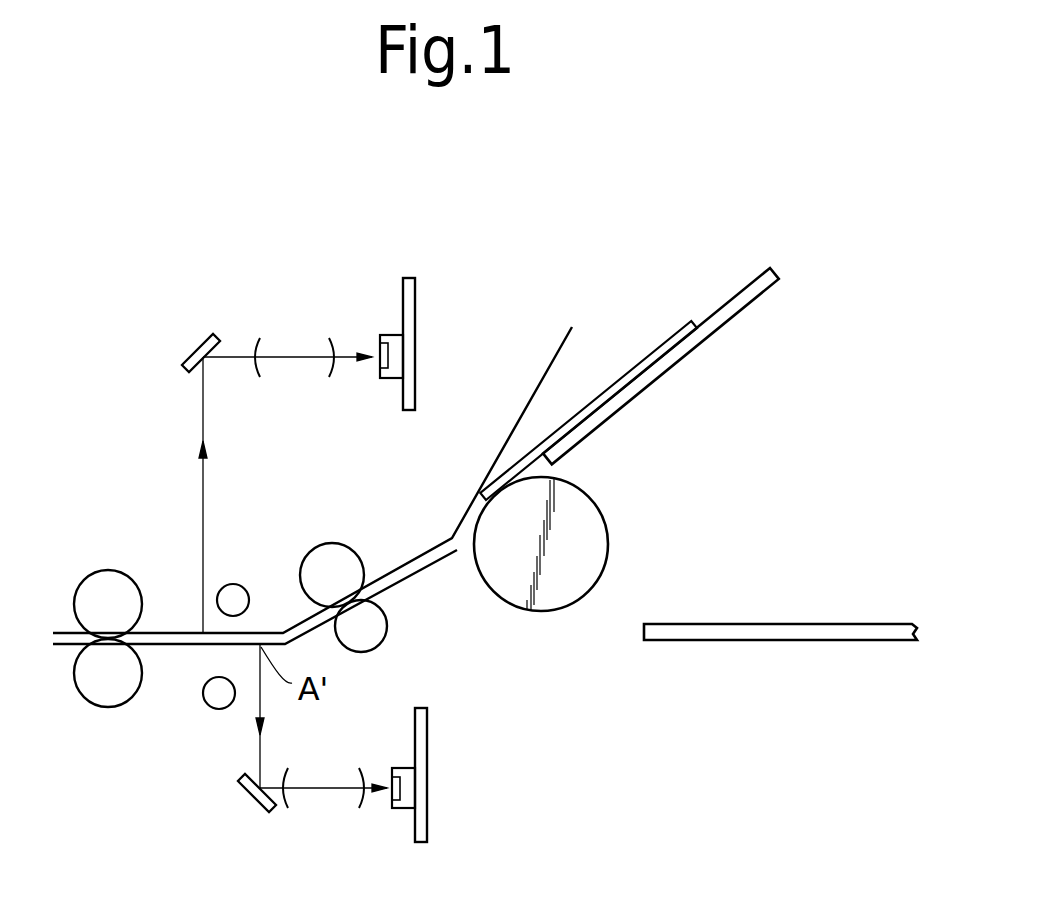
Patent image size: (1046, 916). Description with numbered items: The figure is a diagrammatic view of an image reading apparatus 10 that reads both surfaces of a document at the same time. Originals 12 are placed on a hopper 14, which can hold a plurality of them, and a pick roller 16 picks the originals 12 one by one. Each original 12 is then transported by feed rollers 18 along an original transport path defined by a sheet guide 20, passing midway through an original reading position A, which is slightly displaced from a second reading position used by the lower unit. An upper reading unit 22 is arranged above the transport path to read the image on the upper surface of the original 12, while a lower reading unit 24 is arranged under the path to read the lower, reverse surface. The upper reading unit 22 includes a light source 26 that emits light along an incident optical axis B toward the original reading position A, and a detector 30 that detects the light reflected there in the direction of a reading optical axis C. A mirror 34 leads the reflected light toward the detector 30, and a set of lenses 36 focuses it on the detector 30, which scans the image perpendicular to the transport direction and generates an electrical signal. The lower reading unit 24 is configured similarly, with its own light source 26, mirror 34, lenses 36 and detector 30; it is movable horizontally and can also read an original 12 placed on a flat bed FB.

The image reading apparatus 10 is at (505, 255).
The original 12 is at (633, 368).
The hopper 14 is at (660, 385).
The pick roller 16 is at (606, 542).
The feed rollers 18 is at (84, 668).
The sheet guide 20 is at (430, 557).
The upper reading unit 22 is at (143, 415).
The lower reading unit 24 is at (174, 778).
The light source 26 is at (237, 596).
The detector 30 is at (401, 305).
The mirror 34 is at (190, 347).
The lenses 36 is at (292, 335).
The flat bed FB is at (830, 625).
The original reading position A is at (197, 641).
The incident optical axis B is at (210, 622).
The reading optical axis C is at (198, 511).